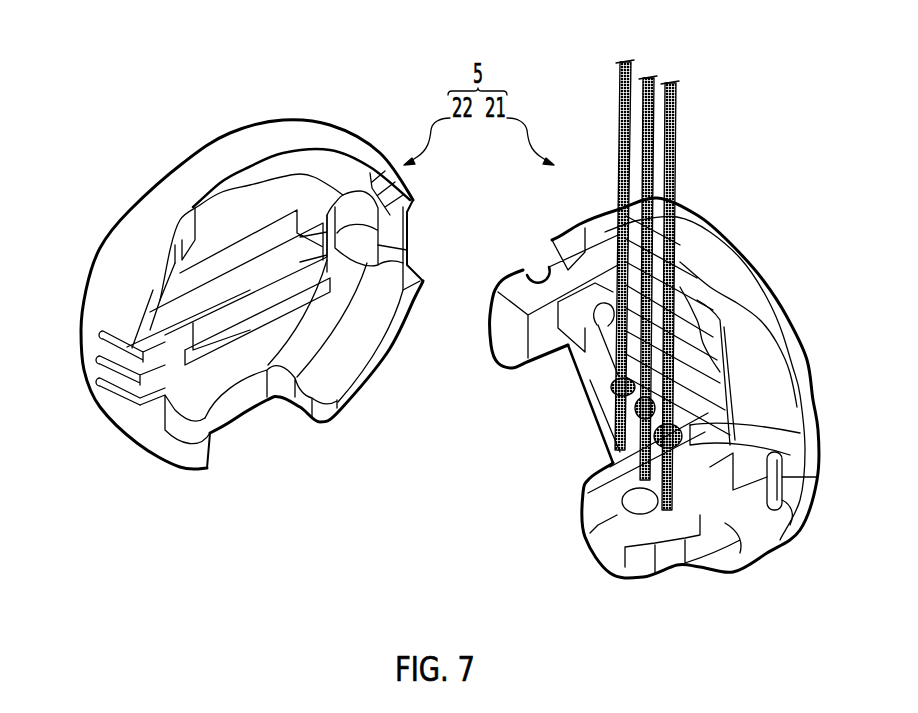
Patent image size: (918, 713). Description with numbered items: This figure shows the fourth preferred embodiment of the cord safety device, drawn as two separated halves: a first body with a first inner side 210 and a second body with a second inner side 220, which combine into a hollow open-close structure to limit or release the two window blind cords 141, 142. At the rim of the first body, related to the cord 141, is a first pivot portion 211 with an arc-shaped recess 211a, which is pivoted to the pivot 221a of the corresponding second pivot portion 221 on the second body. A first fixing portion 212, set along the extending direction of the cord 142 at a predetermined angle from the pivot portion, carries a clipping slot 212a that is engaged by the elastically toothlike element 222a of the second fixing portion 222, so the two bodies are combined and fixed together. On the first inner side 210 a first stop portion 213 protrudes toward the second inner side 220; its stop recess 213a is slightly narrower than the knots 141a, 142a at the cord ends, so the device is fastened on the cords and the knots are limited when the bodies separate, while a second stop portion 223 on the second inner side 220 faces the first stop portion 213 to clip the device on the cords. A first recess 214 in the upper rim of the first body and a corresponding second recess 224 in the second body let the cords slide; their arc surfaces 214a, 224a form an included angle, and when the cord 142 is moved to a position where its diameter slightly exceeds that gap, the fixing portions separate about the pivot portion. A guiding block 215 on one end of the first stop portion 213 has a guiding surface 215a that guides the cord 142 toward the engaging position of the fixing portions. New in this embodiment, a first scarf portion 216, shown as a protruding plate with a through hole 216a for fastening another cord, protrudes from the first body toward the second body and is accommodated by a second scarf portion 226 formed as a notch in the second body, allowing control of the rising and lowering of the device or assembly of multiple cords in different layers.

The cord 141 is at (620, 93).
The knot 141a is at (613, 405).
The cord 142 is at (678, 97).
The knot 142a is at (610, 501).
The first inner side 210 is at (705, 522).
The first pivot portion 211 is at (551, 226).
The arc-shaped recess 211a is at (545, 272).
The first fixing portion 212 is at (790, 481).
The clipping slot 212a is at (785, 512).
The first stop portion 213 is at (693, 323).
The stop recess 213a is at (568, 362).
The first recess 214 is at (680, 268).
The arc surface 214a is at (770, 328).
The guiding block 215 is at (790, 432).
The guiding surface 215a is at (767, 400).
The first scarf portion 216 is at (630, 556).
The through hole 216a is at (590, 533).
The second inner side 220 is at (278, 198).
The second pivot portion 221 is at (412, 217).
The pivot 221a is at (407, 250).
The second fixing portion 222 is at (97, 337).
The elastically toothlike element 222a is at (123, 380).
The second stop portion 223 is at (247, 273).
The second recess 224 is at (258, 182).
The arc surface 224a is at (173, 260).
The second scarf portion 226 is at (250, 430).